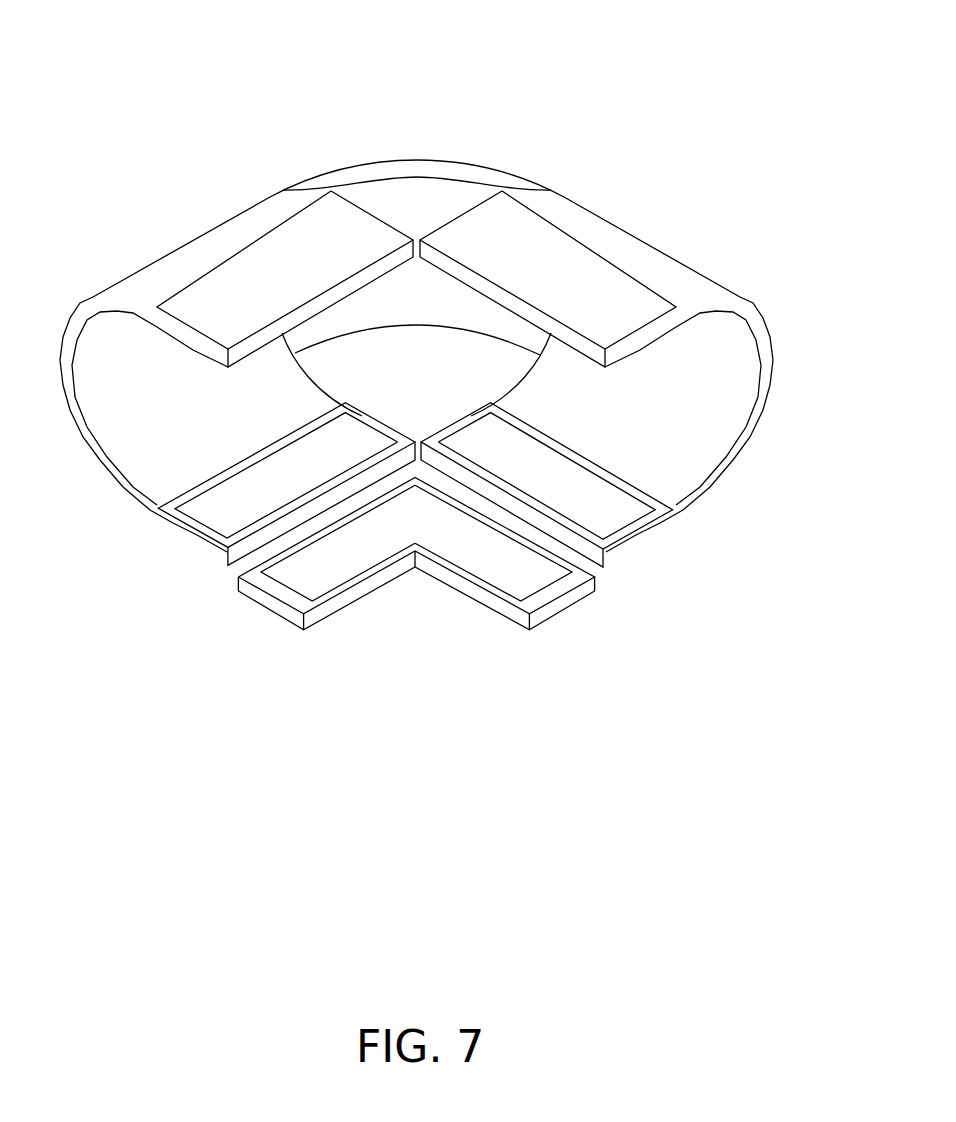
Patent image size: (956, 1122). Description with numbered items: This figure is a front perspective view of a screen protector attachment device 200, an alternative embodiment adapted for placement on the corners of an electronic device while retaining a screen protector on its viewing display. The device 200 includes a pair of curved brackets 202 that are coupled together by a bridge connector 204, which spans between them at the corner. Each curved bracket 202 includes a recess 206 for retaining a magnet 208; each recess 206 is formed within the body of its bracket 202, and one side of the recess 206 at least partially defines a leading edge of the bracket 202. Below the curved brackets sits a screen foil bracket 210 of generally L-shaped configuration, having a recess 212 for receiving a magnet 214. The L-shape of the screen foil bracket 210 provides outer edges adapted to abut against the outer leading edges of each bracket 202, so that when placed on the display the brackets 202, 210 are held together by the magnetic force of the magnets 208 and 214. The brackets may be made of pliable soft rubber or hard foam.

The screen protector attachment device 200 is at (359, 88).
The curved bracket 202 is at (177, 260).
The bridge connector 204 is at (440, 158).
The recess 206 is at (210, 530).
The magnet 208 is at (213, 505).
The screen foil bracket 210 is at (563, 612).
The recess 212 is at (338, 593).
The magnet 214 is at (493, 578).